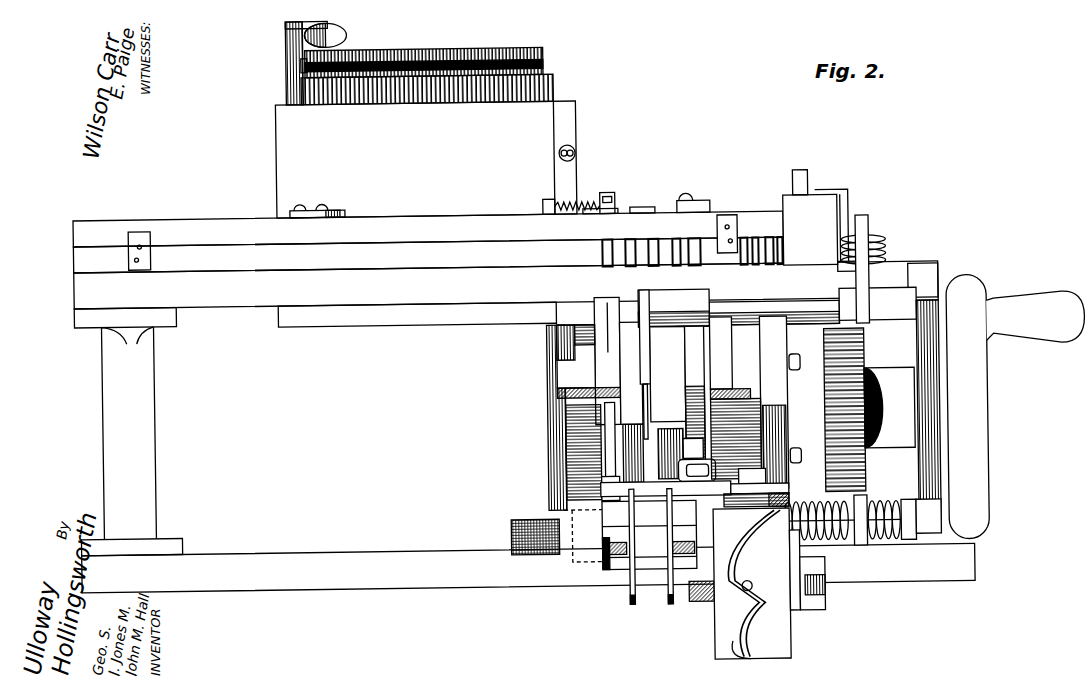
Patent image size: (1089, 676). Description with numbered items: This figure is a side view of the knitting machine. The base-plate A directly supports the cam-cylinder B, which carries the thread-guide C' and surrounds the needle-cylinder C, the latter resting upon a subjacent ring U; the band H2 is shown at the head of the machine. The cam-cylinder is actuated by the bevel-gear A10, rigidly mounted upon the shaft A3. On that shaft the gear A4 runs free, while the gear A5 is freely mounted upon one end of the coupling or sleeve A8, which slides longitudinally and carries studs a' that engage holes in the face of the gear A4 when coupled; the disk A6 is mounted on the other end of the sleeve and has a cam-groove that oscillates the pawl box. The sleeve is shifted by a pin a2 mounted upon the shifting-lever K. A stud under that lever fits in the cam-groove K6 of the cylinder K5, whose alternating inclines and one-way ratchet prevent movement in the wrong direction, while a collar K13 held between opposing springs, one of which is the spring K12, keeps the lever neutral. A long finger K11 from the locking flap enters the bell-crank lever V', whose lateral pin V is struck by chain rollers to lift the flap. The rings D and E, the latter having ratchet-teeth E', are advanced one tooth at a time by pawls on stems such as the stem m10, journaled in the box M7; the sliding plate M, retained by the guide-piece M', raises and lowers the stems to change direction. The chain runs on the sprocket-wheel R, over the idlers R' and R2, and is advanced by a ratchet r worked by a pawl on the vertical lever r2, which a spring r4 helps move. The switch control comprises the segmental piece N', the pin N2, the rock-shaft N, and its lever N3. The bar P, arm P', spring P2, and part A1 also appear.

The base-plate A is at (933, 256).
The cam-cylinder B is at (426, 159).
The needle-cylinder C is at (426, 62).
The thread-guide C' is at (305, 55).
The shaft band H2 is at (560, 70).
The ring D is at (428, 220).
The ring E is at (428, 255).
The ratchet-teeth E' is at (679, 252).
The subjacent ring U is at (417, 314).
The lateral pin V is at (139, 234).
The bell-crank lever V' is at (669, 343).
The rock-shaft N is at (642, 198).
The segmental piece N' is at (556, 205).
The stud or pin N2 is at (612, 199).
The lever N3 is at (612, 316).
The sliding plate M is at (856, 230).
The guide-piece M' is at (844, 214).
The box M7 is at (810, 229).
The vertical stem m10 is at (809, 188).
The plunger bar P is at (873, 265).
The plunger arm P' is at (655, 337).
The plunger spring P2 is at (886, 264).
The sprocket-wheel R is at (655, 411).
The idler R' is at (630, 560).
The idler R2 is at (666, 612).
The ratchet r is at (690, 380).
The vertical lever r2 is at (693, 448).
The spring r4 is at (676, 480).
The ratchet A1 is at (666, 462).
The shaft A3 is at (816, 438).
The gear A4 is at (862, 418).
The gear A5 is at (560, 475).
The disk A6 is at (786, 349).
The coupling or sleeve A8 is at (746, 430).
The bevel-gear A10 is at (566, 436).
The studs a' is at (804, 409).
The pin a2 is at (752, 475).
The shifting-lever K is at (785, 506).
The long finger K11 is at (666, 489).
The spring K12 is at (880, 552).
The collar K13 is at (858, 556).
The cylinder K5 is at (752, 583).
The cam-groove K6 is at (737, 548).